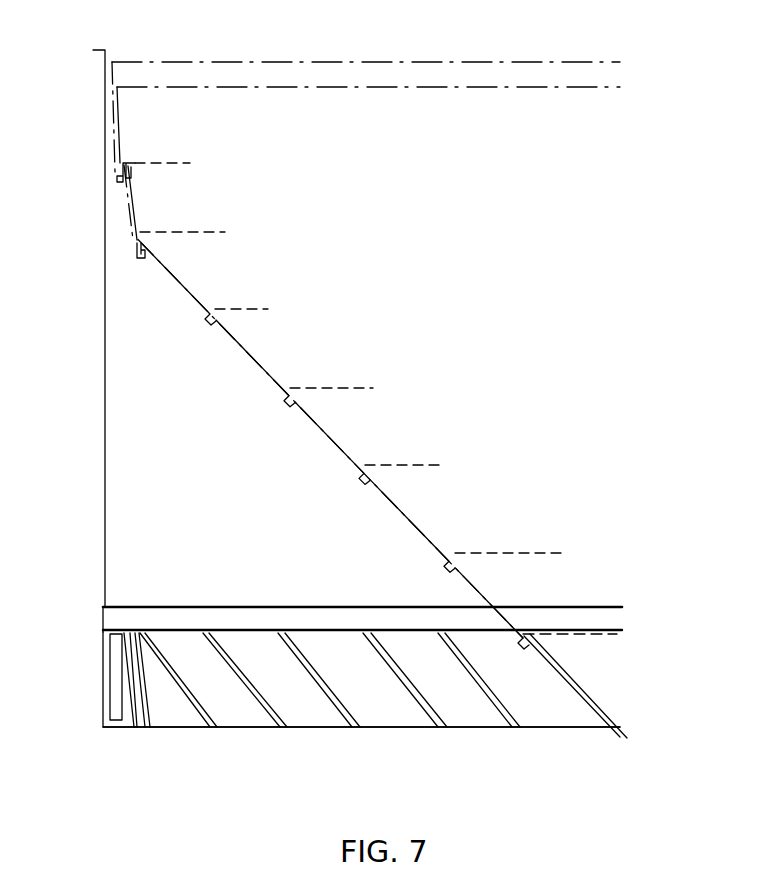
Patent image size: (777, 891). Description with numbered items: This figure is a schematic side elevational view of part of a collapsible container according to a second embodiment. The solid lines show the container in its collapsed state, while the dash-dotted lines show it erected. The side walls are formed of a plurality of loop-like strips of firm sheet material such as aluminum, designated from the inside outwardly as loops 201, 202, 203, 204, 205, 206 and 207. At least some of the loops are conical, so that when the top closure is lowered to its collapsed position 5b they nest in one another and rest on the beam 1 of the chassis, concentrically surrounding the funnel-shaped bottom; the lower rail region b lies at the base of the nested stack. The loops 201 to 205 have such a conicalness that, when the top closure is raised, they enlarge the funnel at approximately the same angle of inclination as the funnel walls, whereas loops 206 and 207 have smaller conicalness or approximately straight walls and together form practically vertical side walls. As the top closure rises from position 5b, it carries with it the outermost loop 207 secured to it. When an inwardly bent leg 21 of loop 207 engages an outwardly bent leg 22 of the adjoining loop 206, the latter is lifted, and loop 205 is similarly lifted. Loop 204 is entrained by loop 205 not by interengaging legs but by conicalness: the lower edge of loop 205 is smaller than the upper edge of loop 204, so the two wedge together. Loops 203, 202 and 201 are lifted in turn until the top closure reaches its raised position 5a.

The beam 1 is at (103, 668).
The raised position of top closure 5a is at (459, 40).
The collapsed position of top closure 5b is at (598, 622).
The bottom rail b is at (600, 710).
The innermost loop 201 is at (478, 590).
The second loop 202 is at (408, 518).
The third loop 203 is at (325, 433).
The fourth loop 204 is at (252, 355).
The fifth loop 205 is at (182, 283).
The sixth loop 206 is at (135, 208).
The outermost loop 207 is at (117, 120).
The inwardly bent leg 21 is at (118, 179).
The outwardly bent leg 22 is at (135, 167).